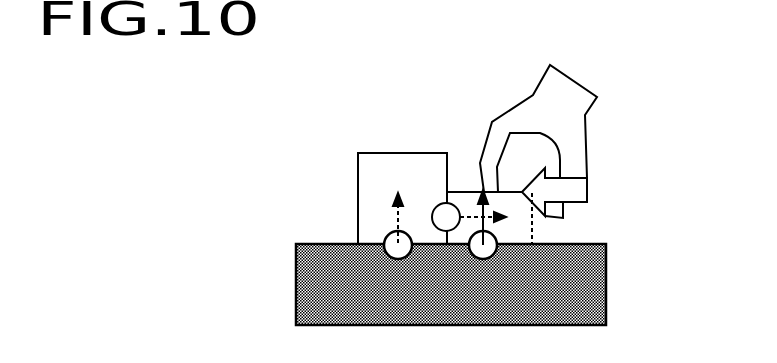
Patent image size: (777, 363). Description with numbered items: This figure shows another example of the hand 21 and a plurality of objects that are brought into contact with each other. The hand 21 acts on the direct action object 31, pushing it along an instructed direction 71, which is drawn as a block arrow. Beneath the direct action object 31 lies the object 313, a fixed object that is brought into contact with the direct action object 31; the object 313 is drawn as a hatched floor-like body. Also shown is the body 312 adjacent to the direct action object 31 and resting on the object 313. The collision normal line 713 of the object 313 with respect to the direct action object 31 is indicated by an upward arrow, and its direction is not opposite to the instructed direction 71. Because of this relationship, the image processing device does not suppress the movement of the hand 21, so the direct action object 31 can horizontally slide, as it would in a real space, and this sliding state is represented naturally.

The hand 21 is at (573, 122).
The direct action object 31 is at (525, 238).
The instructed direction 71 is at (577, 190).
The main body 312 is at (360, 198).
The object 313 is at (606, 302).
The collision normal line 713 is at (482, 205).